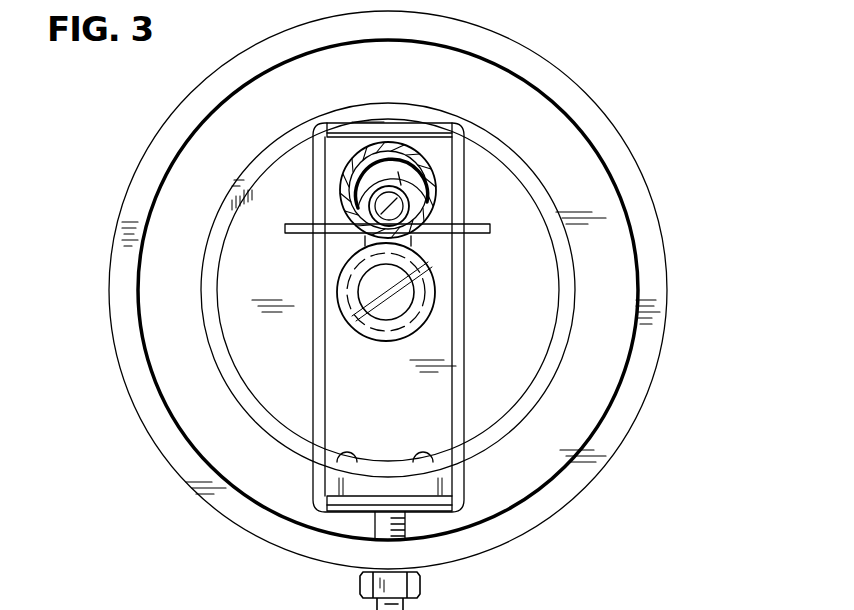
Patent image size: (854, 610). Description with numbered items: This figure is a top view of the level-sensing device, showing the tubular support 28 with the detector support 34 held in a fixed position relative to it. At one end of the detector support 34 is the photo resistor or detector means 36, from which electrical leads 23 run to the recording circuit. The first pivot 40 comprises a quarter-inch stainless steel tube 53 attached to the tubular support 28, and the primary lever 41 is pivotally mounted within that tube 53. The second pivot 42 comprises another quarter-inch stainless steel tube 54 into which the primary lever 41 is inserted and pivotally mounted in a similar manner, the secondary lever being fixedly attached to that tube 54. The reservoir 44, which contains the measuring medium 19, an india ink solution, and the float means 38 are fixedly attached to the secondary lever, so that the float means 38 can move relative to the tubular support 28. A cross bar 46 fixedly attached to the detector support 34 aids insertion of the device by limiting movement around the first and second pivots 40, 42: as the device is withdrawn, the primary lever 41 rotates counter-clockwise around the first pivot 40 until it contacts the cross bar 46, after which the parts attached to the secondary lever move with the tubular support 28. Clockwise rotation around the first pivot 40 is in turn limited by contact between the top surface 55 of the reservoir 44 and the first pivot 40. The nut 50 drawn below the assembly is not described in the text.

The india ink solution 19 is at (272, 287).
The electrical leads 23 is at (432, 192).
The tubular support 28 is at (348, 160).
The detector support 34 is at (355, 187).
The photo resistor 36 is at (381, 310).
The float means 38 is at (657, 388).
The first pivot 40 is at (368, 118).
The primary lever 41 is at (312, 380).
The second pivot 42 is at (357, 525).
The reservoir 44 is at (508, 282).
The cross bar 46 is at (482, 223).
The nut 50 is at (500, 607).
The stainless steel tube 53 is at (440, 130).
The stainless steel tube 54 is at (448, 512).
The top surface 55 is at (257, 167).